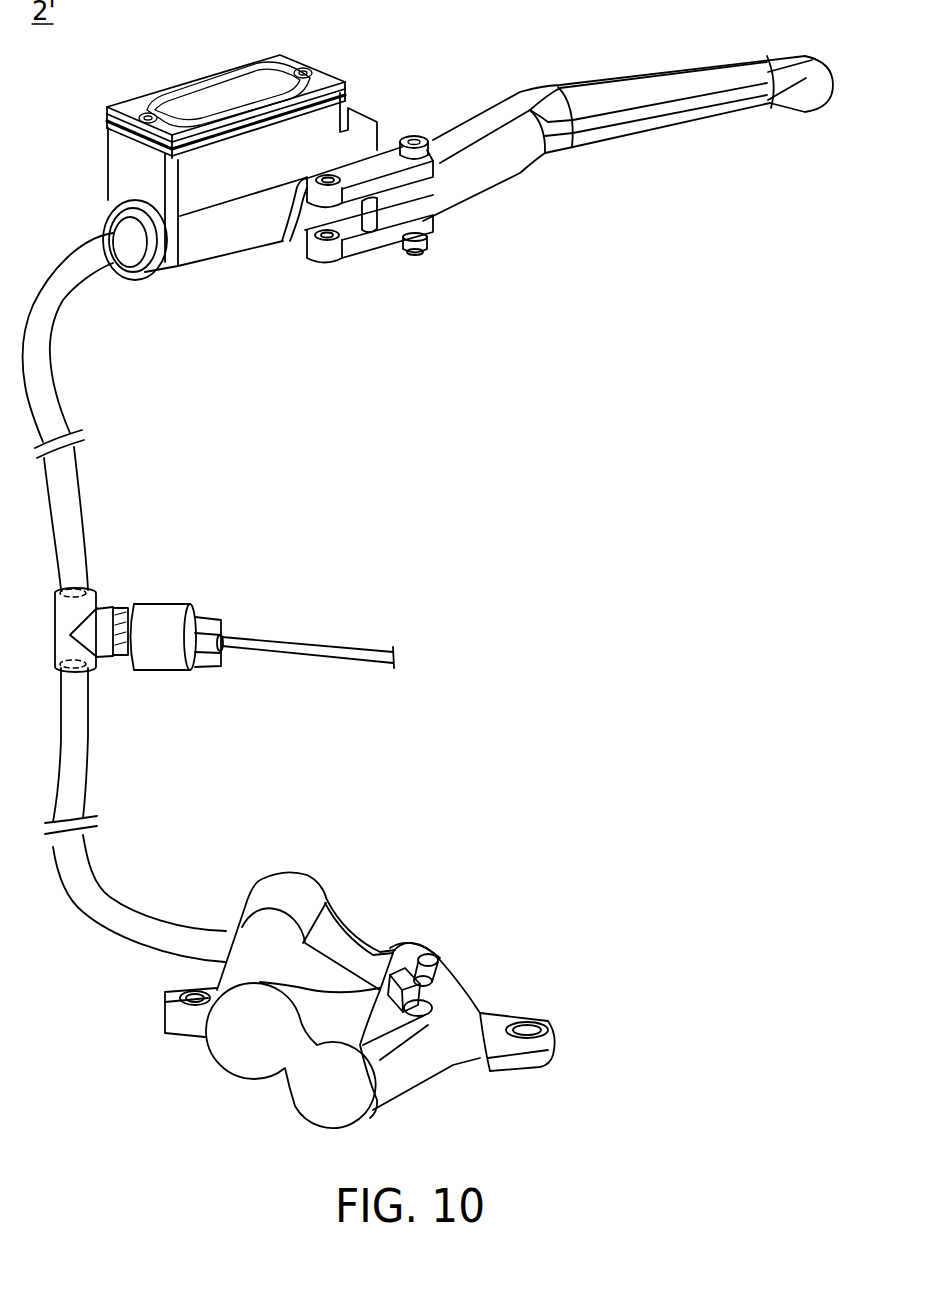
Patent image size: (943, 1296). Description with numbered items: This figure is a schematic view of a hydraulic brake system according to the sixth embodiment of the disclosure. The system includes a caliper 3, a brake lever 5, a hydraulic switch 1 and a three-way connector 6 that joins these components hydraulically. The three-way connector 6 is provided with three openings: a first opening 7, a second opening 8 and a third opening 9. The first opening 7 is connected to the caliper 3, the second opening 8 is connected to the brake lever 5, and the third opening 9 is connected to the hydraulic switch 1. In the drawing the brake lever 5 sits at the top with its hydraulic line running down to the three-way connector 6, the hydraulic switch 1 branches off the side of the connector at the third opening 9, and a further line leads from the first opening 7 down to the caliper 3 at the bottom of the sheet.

The brake lever 5 is at (372, 92).
The three-way connector 6 is at (62, 612).
The first opening 7 is at (73, 657).
The second opening 8 is at (78, 586).
The third opening 9 is at (126, 640).
The hydraulic switch 1 is at (181, 598).
The caliper 3 is at (294, 893).